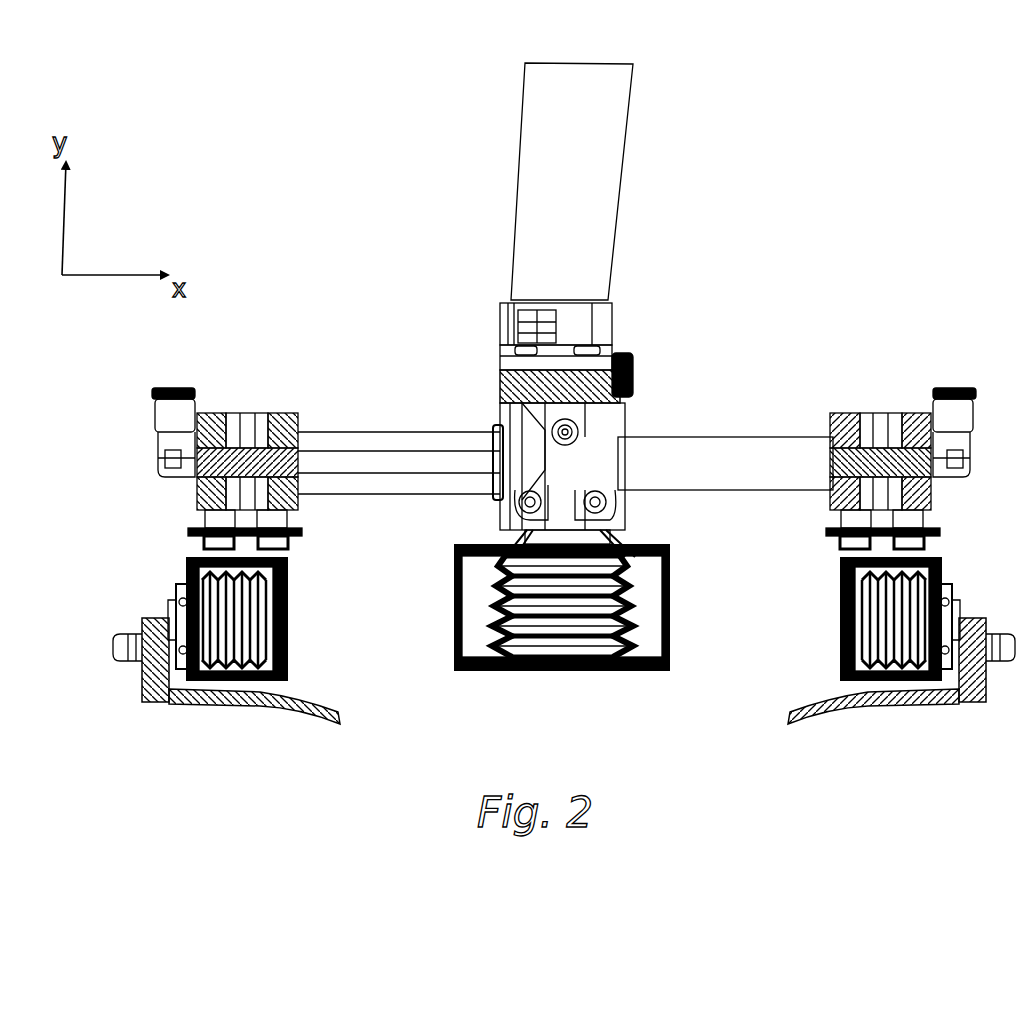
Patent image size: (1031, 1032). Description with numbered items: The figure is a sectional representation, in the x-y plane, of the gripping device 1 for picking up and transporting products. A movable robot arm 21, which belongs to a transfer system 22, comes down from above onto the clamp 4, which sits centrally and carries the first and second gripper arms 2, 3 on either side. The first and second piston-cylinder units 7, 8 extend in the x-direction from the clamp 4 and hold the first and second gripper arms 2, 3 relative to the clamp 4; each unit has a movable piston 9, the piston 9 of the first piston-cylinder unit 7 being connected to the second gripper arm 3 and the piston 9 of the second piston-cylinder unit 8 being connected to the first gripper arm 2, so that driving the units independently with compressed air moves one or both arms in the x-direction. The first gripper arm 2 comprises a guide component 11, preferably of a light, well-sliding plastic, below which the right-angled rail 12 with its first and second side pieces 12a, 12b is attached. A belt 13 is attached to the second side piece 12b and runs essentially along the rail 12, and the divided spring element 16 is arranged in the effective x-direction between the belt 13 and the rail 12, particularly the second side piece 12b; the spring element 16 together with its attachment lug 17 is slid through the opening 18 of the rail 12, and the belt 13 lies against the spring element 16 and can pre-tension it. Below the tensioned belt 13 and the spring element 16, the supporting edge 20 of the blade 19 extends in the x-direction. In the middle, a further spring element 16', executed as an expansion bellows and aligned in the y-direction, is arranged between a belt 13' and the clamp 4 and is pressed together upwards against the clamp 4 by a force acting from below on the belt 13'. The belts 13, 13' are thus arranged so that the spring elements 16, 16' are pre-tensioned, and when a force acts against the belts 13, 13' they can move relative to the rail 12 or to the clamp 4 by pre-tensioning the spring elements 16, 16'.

The gripping device 1 is at (774, 340).
The first gripper arm 2 is at (210, 358).
The second gripper arm 3 is at (889, 376).
The clamp 4 is at (607, 380).
The first piston-cylinder unit 7 is at (380, 421).
The second piston-cylinder unit 8 is at (724, 478).
The movable piston 9 is at (423, 462).
The guide component 11 is at (287, 412).
The rail 12 is at (959, 527).
The first side piece 12a is at (292, 530).
The second side piece 12b is at (178, 583).
The belt 13 is at (564, 627).
The belt 13' is at (601, 646).
The divided spring element 16 is at (564, 634).
The spring element 16' is at (622, 606).
The attachment lug 17 is at (177, 582).
The opening 18 is at (143, 705).
The blade 19 is at (124, 691).
The supporting edge 20 is at (222, 705).
The robot arm 21 is at (590, 193).
The transfer system 22 is at (756, 86).